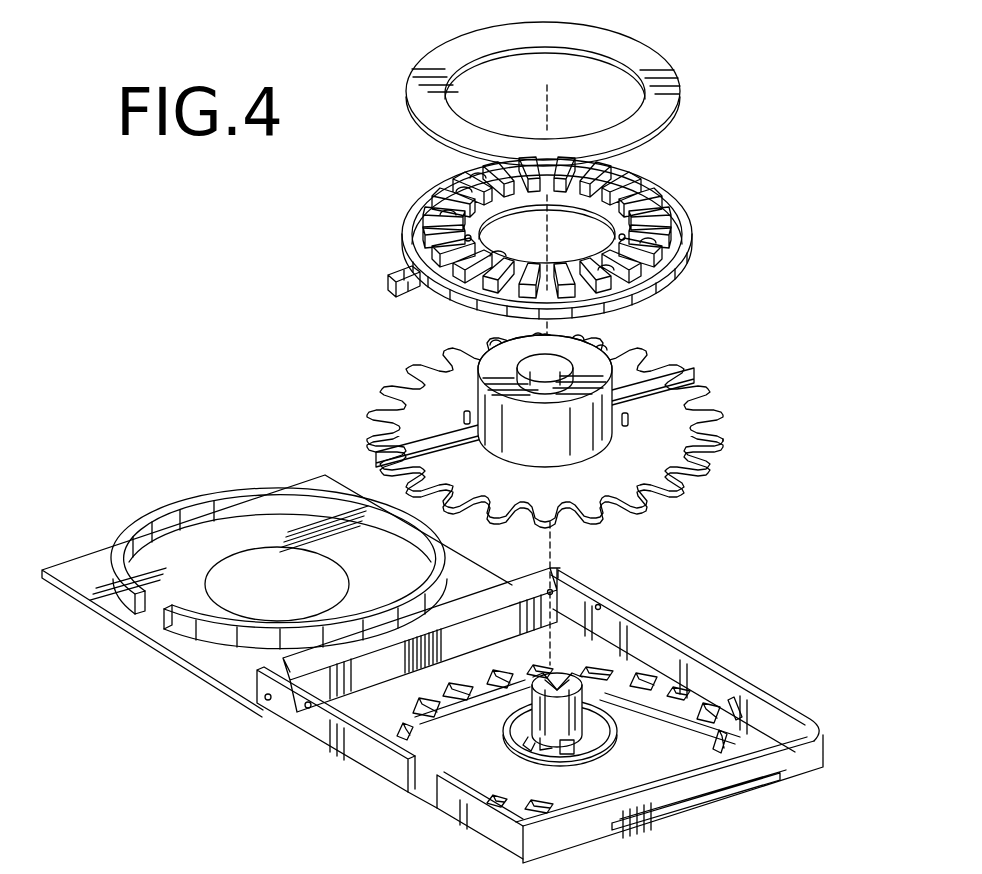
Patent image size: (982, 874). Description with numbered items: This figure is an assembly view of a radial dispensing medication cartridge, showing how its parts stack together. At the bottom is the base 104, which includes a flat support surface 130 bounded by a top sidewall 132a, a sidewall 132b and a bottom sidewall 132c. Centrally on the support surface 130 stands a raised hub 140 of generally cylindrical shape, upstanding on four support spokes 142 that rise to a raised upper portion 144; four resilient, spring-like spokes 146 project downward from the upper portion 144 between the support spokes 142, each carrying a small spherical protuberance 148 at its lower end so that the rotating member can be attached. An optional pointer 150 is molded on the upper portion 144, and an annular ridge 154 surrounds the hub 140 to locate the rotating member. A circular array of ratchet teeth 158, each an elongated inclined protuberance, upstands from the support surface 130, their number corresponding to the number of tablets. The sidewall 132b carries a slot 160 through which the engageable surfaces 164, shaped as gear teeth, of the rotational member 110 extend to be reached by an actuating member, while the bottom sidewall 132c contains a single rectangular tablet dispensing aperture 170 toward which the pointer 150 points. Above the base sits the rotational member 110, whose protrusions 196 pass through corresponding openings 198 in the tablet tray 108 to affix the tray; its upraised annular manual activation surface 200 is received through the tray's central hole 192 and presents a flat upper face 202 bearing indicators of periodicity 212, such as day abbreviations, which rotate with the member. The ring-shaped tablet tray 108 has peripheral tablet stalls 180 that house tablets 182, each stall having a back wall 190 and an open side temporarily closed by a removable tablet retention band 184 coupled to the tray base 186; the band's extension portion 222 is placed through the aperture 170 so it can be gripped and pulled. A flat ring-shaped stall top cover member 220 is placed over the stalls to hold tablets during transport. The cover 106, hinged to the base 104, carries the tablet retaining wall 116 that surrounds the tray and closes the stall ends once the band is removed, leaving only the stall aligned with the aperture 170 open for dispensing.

The base 104 is at (566, 715).
The cover 106 is at (268, 579).
The tablet tray 108 is at (549, 238).
The rotational member 110 is at (569, 418).
The tablet retaining wall 116 is at (205, 505).
The support surface 130 is at (773, 723).
The top sidewall 132a is at (778, 720).
The sidewall 132b is at (693, 799).
The bottom sidewall 132c is at (390, 763).
The raised hub 140 is at (583, 673).
The support spokes 142 is at (606, 690).
The upper portion 144 is at (533, 680).
The resilient spokes 146 is at (606, 735).
The protuberance 148 is at (590, 753).
The pointer 150 is at (577, 668).
The annular ridge 154 is at (527, 752).
The ratchet teeth 158 is at (733, 727).
The slot 160 is at (723, 790).
The engageable surfaces 164 is at (720, 450).
The tablet dispensing aperture 170 is at (427, 787).
The tablet stalls 180 is at (445, 192).
The tablets 182 is at (660, 238).
The removable tablet retention band 184 is at (452, 292).
The base of the tablet tray 186 is at (615, 240).
The back wall 190 is at (480, 192).
The hole 192 is at (480, 237).
The protrusions 196 is at (635, 420).
The openings 198 is at (640, 225).
The manual activation surface 200 is at (465, 401).
The upper face 202 is at (493, 408).
The indicators of periodicity 212 is at (585, 362).
The stall top cover member 220 is at (650, 64).
The extension portion 222 is at (400, 288).